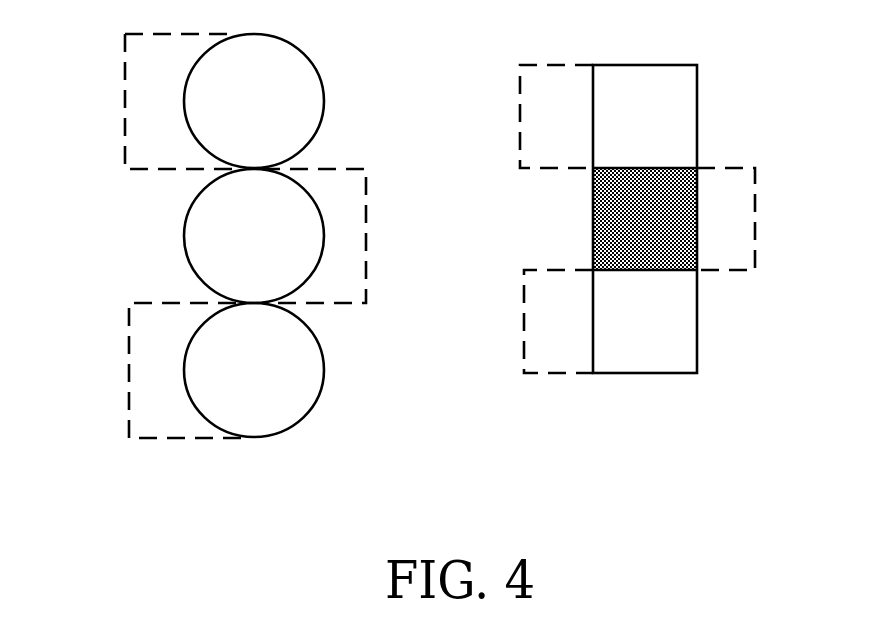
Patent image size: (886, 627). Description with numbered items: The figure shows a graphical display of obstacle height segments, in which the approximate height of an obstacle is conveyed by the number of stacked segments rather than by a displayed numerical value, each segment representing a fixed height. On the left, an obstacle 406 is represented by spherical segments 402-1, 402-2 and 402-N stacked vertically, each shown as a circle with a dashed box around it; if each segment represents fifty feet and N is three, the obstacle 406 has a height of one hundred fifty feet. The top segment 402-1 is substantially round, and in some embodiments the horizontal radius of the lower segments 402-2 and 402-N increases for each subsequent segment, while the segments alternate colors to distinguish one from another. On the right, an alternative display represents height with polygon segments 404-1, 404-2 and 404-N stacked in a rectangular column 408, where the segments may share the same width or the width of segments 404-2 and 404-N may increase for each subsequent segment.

The spherical segment 402-1 is at (125, 110).
The spherical segment 402-2 is at (366, 238).
The spherical segment 402-N is at (129, 391).
The obstacle 406 is at (257, 442).
The polygon segment 404-1 is at (520, 128).
The polygon segment 404-2 is at (755, 220).
The polygon segment 404-N is at (524, 335).
The rectangular element 408 is at (653, 377).